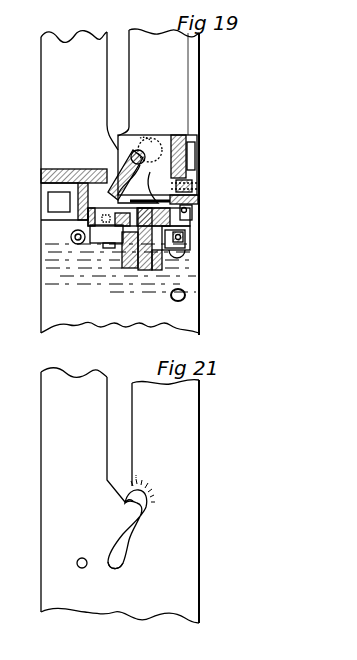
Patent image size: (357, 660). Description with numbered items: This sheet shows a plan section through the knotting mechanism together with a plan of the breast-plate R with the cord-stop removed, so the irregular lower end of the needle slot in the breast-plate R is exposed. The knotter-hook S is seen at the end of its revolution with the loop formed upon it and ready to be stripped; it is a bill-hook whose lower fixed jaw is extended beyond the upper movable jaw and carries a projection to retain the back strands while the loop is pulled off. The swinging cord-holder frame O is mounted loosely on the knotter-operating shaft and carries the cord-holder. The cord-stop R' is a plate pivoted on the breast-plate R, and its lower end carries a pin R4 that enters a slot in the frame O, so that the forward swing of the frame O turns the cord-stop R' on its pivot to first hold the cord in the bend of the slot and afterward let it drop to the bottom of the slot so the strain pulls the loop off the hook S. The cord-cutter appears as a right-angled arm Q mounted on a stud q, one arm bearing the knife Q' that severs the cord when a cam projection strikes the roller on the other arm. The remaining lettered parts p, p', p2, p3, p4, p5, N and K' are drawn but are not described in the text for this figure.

In FIG. 19, the plate p is at (81, 175).
In FIG. 21, the plate p is at (83, 490).
In FIG. 19, the breast-plate R is at (158, 182).
In FIG. 21, the breast-plate R is at (165, 501).
In FIG. 19, the cord-stop R' is at (188, 145).
In FIG. 19, the knife Q' is at (208, 173).
In FIG. 19, the right-angled arm Q is at (191, 199).
In FIG. 19, the stud q is at (190, 213).
In FIG. 19, the pin R4 is at (187, 237).
In FIG. 19, the pin p4 is at (175, 240).
In FIG. 19, the swinging cord-holder frame O is at (155, 252).
In FIG. 19, the knotter-hook S is at (118, 165).
In FIG. 19, the bracket N is at (70, 170).
In FIG. 19, the pivot p3 is at (70, 237).
In FIG. 19, the lever K' is at (62, 253).
In FIG. 21, the lip p2 is at (124, 502).
In FIG. 21, the spring hook p' is at (139, 522).
In FIG. 21, the hook end p5 is at (117, 558).